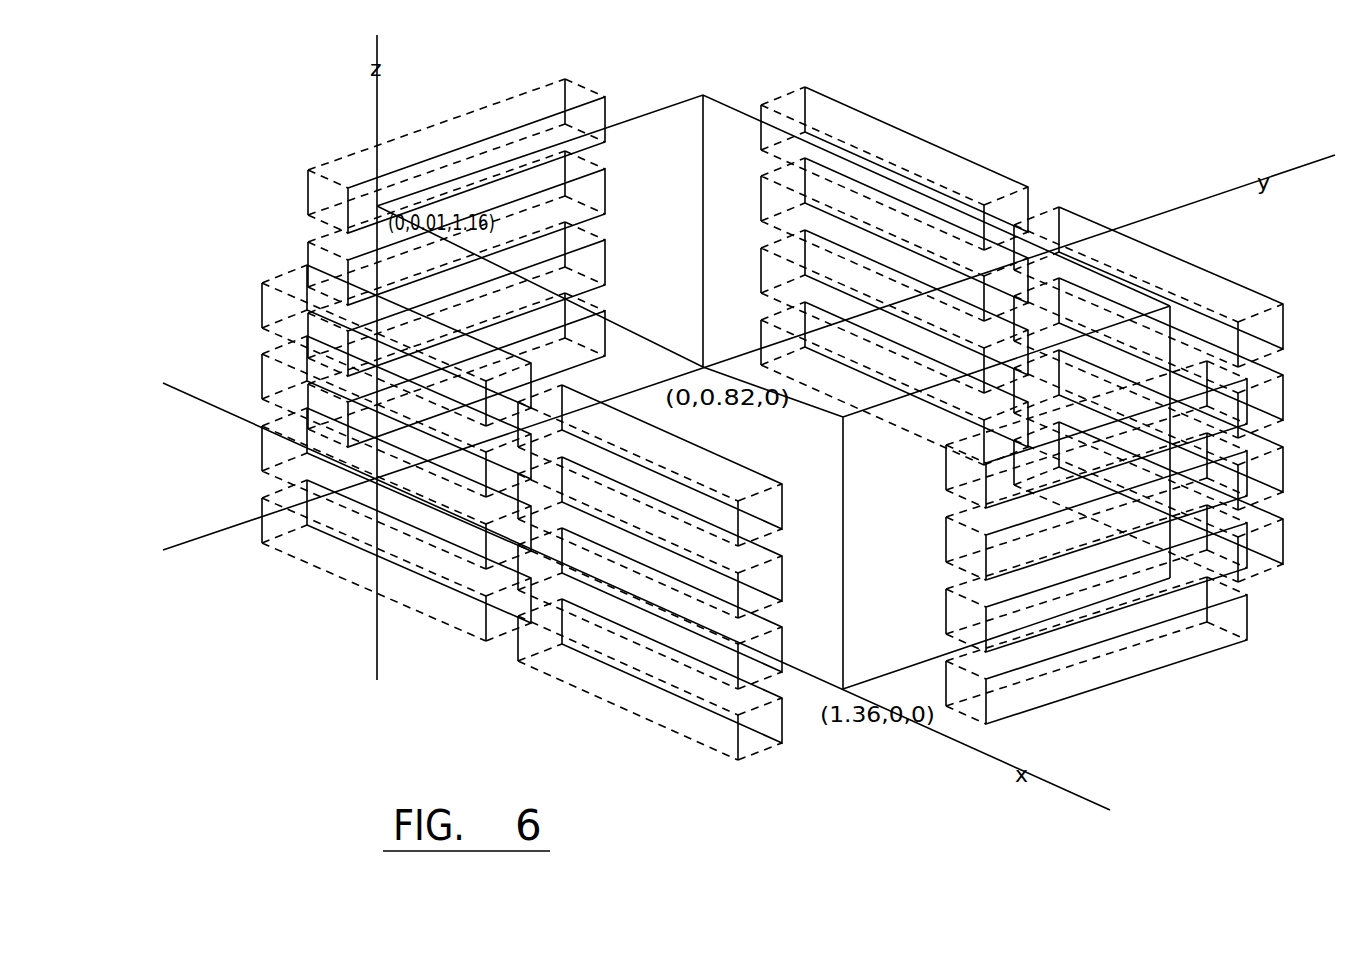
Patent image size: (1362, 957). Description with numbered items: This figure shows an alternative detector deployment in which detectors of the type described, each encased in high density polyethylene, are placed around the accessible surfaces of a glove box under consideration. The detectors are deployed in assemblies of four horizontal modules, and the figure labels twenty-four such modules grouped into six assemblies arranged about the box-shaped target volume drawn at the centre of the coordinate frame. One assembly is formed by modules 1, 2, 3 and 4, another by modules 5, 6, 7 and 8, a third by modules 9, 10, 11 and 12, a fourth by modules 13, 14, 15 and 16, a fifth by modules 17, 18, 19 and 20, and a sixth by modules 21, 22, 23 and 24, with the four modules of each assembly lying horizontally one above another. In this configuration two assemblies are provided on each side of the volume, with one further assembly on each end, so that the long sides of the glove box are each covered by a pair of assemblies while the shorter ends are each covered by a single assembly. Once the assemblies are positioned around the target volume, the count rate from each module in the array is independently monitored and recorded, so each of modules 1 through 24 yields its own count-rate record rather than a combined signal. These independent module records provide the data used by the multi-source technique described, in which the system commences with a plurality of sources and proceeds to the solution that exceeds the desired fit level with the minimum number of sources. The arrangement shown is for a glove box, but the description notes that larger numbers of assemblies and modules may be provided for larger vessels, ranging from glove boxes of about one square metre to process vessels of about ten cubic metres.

The detector module 1 is at (410, 345).
The detector module 2 is at (410, 416).
The detector module 3 is at (410, 488).
The detector module 4 is at (410, 560).
The detector module 5 is at (664, 465).
The detector module 6 is at (664, 537).
The detector module 7 is at (664, 608).
The detector module 8 is at (664, 679).
The detector module 9 is at (1096, 434).
The detector module 10 is at (1096, 506).
The detector module 11 is at (1096, 578).
The detector module 12 is at (1096, 650).
The detector module 13 is at (1148, 287).
The detector module 14 is at (1148, 358).
The detector module 15 is at (1148, 430).
The detector module 16 is at (1148, 502).
The detector module 17 is at (894, 168).
The detector module 18 is at (894, 239).
The detector module 19 is at (894, 311).
The detector module 20 is at (894, 383).
The detector module 21 is at (456, 156).
The detector module 22 is at (456, 228).
The detector module 23 is at (456, 299).
The detector module 24 is at (456, 370).